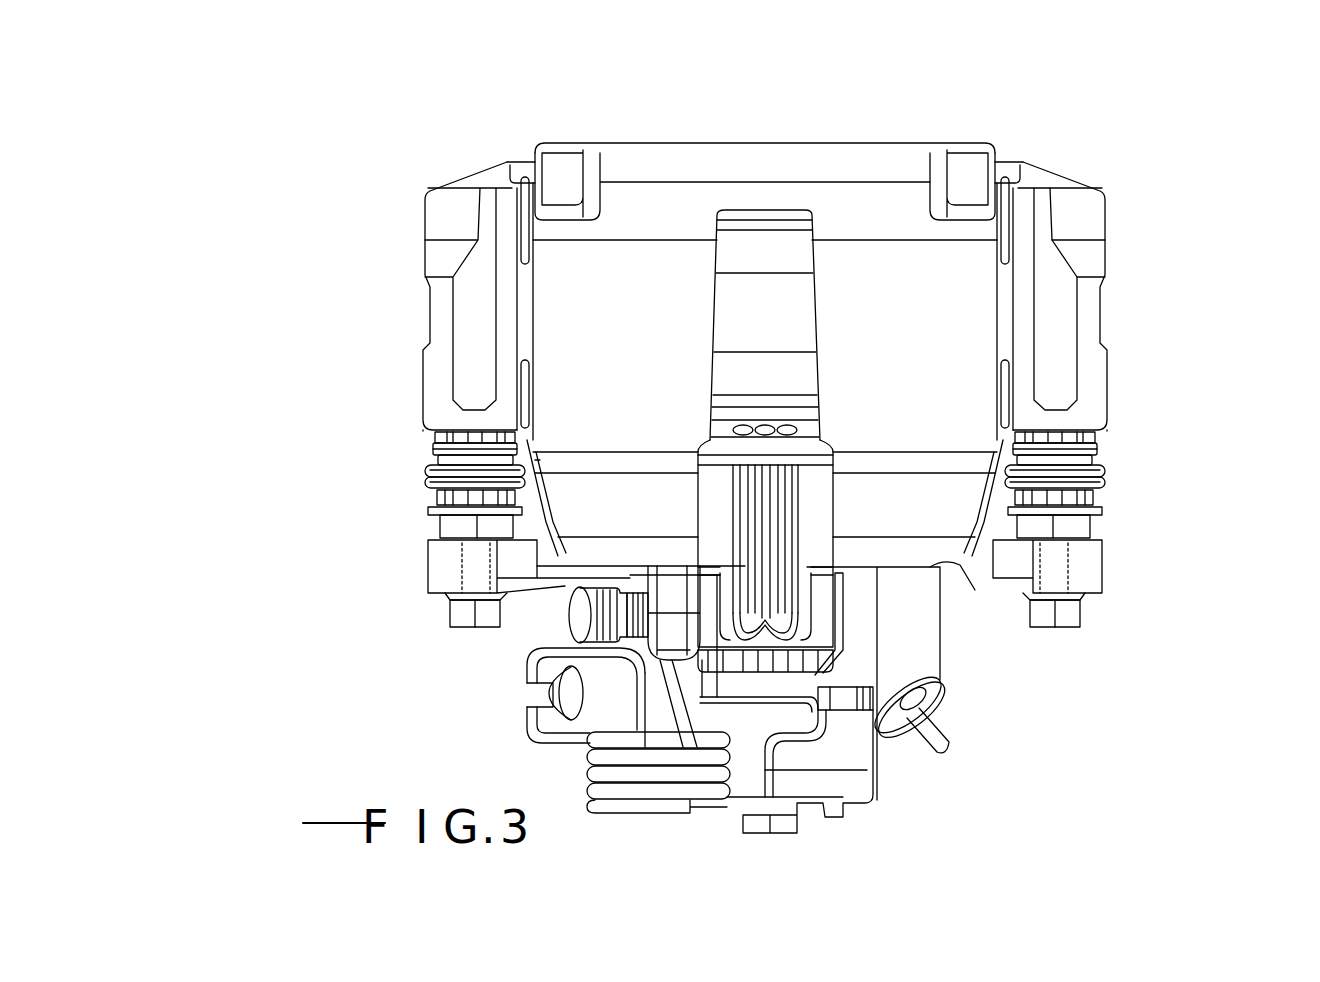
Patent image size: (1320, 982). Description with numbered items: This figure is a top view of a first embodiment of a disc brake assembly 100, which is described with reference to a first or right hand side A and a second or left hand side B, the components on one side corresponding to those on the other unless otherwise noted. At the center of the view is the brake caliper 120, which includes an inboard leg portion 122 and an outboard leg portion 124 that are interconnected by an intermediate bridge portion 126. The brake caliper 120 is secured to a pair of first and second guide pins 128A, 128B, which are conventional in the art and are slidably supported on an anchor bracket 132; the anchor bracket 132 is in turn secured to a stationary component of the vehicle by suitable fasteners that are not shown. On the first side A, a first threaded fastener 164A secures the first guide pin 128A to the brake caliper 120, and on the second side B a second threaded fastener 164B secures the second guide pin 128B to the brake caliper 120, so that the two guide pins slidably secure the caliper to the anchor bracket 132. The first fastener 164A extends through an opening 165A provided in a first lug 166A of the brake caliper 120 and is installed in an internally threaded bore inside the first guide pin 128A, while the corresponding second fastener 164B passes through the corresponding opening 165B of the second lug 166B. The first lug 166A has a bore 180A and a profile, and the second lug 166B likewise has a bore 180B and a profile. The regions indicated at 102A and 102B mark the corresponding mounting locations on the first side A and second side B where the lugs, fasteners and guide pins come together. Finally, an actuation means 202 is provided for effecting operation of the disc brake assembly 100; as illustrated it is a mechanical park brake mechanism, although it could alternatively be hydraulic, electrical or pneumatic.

The disc brake assembly 100 is at (1133, 151).
The brake caliper 120 is at (877, 301).
The outboard leg portion 124 is at (654, 142).
The intermediate bridge portion 126 is at (573, 338).
The anchor bracket 132 is at (1092, 373).
The first side A is at (1150, 297).
The second side B is at (371, 390).
The first guide pin 128A is at (1085, 526).
The second guide pin 128B is at (448, 525).
The bore 180A is at (1068, 542).
The bore 180B is at (462, 542).
The first lug 166A is at (1100, 571).
The second lug 166B is at (428, 571).
The opening 165A is at (1080, 608).
The opening 165B is at (450, 613).
The first threaded fastener 164A is at (1080, 636).
The second threaded fastener 164B is at (456, 629).
The first mounting location 102A is at (1101, 590).
The second mounting location 102B is at (399, 596).
The inboard leg portion 122 is at (597, 561).
The actuation means 202 is at (810, 770).